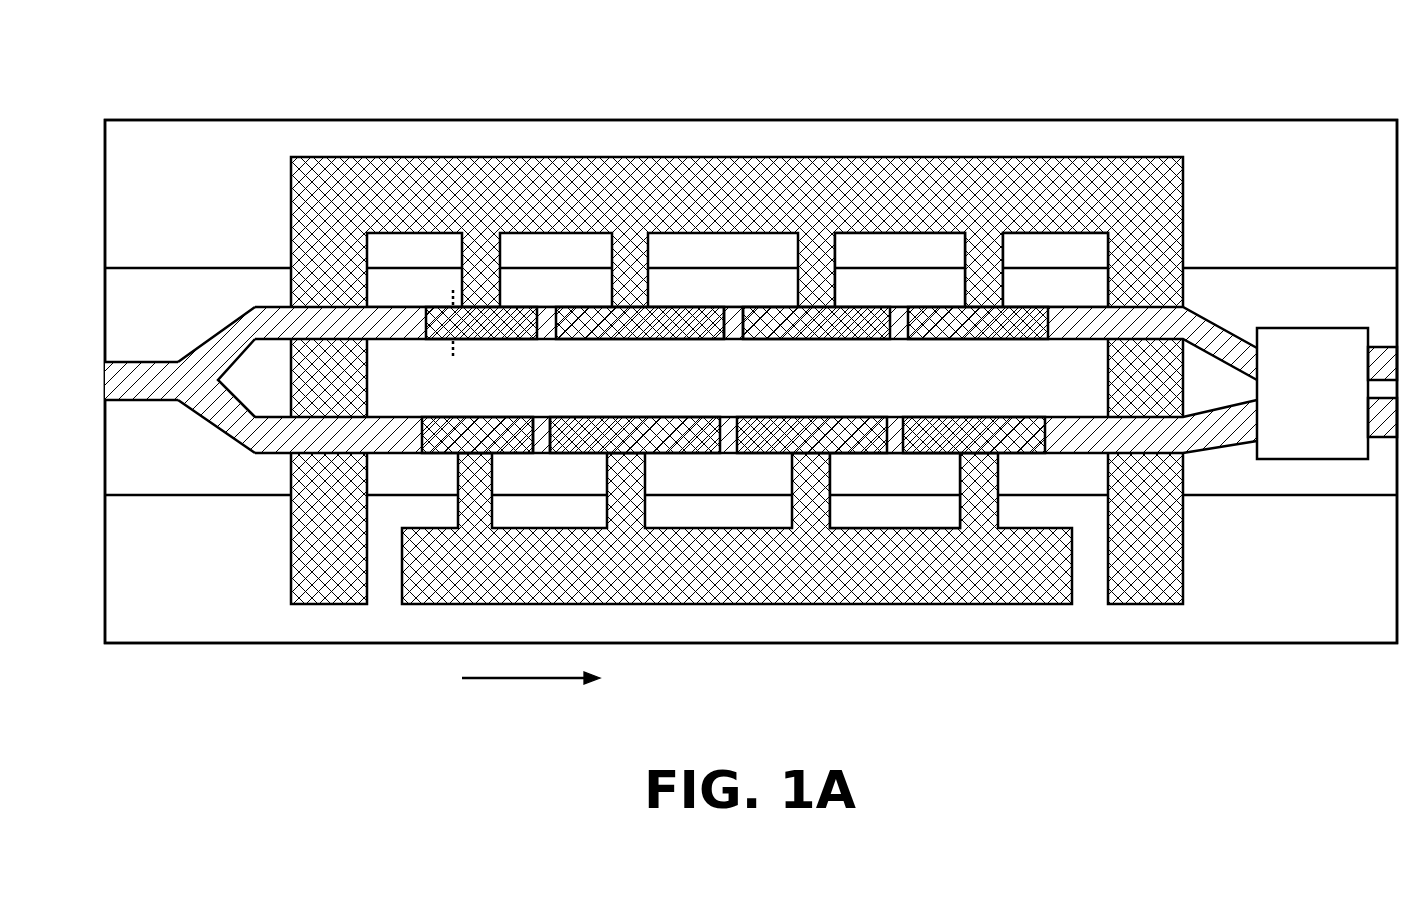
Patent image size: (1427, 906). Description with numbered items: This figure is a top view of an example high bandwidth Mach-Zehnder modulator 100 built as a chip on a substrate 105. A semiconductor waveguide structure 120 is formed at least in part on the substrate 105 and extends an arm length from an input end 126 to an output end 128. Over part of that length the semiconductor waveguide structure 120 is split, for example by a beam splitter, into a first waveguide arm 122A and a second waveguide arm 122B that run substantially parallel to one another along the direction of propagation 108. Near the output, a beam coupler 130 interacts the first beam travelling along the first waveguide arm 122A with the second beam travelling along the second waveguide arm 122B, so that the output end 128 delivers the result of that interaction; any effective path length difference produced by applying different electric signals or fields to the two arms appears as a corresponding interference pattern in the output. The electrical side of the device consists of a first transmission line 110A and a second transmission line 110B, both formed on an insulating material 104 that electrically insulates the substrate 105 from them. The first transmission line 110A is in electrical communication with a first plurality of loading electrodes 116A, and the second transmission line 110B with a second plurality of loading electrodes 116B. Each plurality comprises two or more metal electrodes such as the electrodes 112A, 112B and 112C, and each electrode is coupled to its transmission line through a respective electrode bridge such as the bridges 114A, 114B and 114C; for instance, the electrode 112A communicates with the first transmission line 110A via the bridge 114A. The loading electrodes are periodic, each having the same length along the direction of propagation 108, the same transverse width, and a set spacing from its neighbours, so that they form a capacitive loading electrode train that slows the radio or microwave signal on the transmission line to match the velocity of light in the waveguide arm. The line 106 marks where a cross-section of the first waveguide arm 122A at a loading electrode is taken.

The modulator 100 is at (1142, 83).
The insulating material 104 is at (330, 130).
The substrate 105 is at (232, 472).
The line 106 is at (453, 288).
The direction of propagation 108 is at (527, 678).
The first transmission line 110A is at (718, 158).
The second transmission line 110B is at (773, 605).
The electrode 112A is at (840, 339).
The electrode 112B is at (972, 339).
The electrode 112C is at (847, 417).
The electrode bridge 114A is at (817, 250).
The electrode bridge 114B is at (983, 250).
The electrode bridge 114C is at (832, 488).
The first plurality of loading electrodes 116A is at (403, 346).
The second plurality of loading electrodes 116B is at (388, 449).
The semiconductor waveguide structure 120 is at (157, 362).
The first waveguide arm 122A is at (733, 338).
The second waveguide arm 122B is at (547, 418).
The input end 126 is at (117, 400).
The output end 128 is at (1383, 346).
The beam coupler 130 is at (1290, 455).